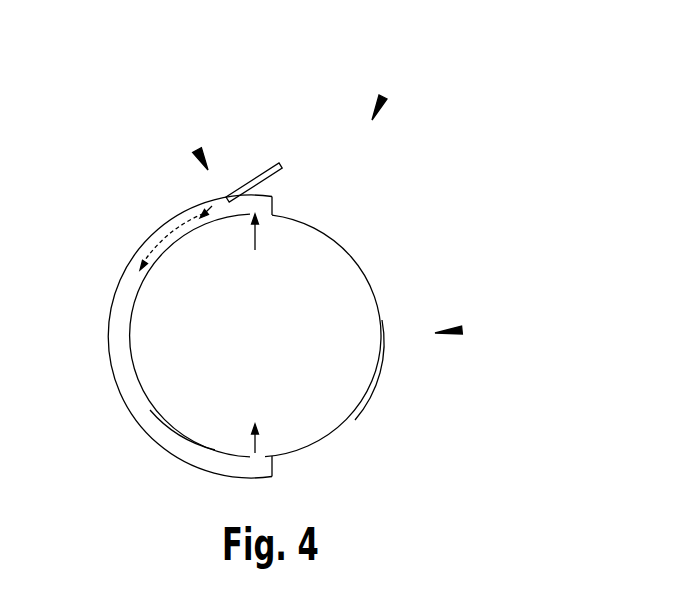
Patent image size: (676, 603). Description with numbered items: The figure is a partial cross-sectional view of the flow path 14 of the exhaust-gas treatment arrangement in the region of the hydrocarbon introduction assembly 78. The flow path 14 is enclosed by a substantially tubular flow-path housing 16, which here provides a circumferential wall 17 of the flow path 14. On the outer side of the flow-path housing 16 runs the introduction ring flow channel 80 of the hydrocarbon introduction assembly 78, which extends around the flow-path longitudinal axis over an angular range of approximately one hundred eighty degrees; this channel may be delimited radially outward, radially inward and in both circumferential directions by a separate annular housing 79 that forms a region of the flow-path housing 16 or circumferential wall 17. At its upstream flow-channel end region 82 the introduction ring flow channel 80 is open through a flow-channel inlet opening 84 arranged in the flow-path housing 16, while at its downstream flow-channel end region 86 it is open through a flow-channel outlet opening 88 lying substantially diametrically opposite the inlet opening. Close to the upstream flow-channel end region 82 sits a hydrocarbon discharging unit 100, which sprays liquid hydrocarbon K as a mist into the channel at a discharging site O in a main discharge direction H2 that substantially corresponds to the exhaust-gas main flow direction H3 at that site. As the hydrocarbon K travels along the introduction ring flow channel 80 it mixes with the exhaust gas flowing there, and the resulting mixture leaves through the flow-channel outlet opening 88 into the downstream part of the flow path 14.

The flow path 14 is at (372, 385).
The flow-path housing 16 is at (380, 300).
The circumferential wall 17 is at (185, 436).
The hydrocarbon introduction assembly 78 is at (383, 97).
The annular housing 79 is at (462, 330).
The introduction ring flow channel 80 is at (113, 370).
The upstream flow-channel end region 82 is at (255, 200).
The flow-channel inlet opening 84 is at (272, 205).
The downstream flow-channel end region 86 is at (243, 467).
The flow-channel outlet opening 88 is at (273, 465).
The hydrocarbon discharging unit 100 is at (278, 163).
The discharging site O is at (196, 149).
The main discharge direction H2 is at (208, 203).
The exhaust-gas main flow direction H3 is at (137, 255).
The liquid hydrocarbon K is at (170, 228).